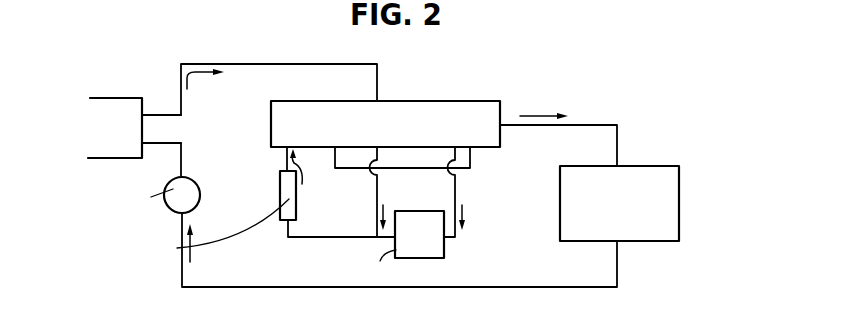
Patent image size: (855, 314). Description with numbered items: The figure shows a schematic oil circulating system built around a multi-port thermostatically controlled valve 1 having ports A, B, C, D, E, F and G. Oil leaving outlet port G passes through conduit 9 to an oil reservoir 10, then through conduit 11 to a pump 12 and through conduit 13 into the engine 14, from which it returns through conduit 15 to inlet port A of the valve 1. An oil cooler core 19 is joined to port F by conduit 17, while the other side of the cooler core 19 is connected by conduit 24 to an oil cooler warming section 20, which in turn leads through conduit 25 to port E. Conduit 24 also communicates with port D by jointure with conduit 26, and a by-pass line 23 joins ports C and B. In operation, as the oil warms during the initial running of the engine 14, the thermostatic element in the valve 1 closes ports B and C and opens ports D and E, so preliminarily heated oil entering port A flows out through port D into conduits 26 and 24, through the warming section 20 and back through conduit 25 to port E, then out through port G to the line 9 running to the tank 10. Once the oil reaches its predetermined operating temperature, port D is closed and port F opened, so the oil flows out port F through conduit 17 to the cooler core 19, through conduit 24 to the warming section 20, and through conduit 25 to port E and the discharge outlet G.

The multi-port thermostatically controlled valve 1 is at (447, 110).
The conduit 9 is at (571, 128).
The oil reservoir 10 is at (668, 209).
The conduit 11 is at (276, 286).
The pump 12 is at (200, 198).
The conduit 13 is at (183, 161).
The engine 14 is at (110, 106).
The conduit 15 is at (247, 64).
The conduit 17 is at (455, 191).
The oil cooler core 19 is at (443, 252).
The oil cooler warming section 20 is at (296, 207).
The by-pass line 23 is at (392, 170).
The conduit 24 is at (316, 237).
The conduit 25 is at (286, 154).
The conduit 26 is at (377, 191).